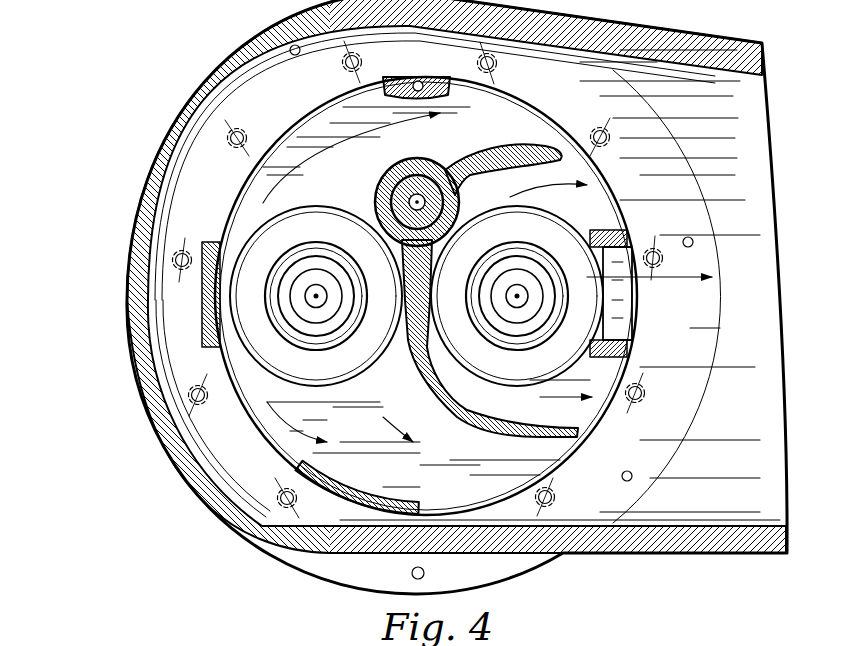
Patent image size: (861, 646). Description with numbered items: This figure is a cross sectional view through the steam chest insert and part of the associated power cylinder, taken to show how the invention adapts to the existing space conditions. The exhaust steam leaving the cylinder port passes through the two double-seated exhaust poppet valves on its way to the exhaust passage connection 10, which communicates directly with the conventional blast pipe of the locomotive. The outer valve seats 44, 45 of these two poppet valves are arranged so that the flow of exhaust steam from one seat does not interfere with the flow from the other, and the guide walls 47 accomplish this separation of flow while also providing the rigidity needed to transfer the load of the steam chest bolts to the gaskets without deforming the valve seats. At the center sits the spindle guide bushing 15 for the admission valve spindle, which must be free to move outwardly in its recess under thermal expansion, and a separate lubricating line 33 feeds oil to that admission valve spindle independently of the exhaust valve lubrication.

The exhaust passage connection 10 is at (457, 297).
The spindle guide bushing 15 is at (385, 190).
The lubricating line 33 is at (418, 80).
The outer valve seat 44 is at (352, 378).
The outer valve seat 45 is at (515, 363).
The guide walls 47 is at (545, 152).